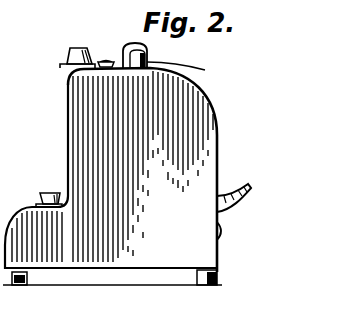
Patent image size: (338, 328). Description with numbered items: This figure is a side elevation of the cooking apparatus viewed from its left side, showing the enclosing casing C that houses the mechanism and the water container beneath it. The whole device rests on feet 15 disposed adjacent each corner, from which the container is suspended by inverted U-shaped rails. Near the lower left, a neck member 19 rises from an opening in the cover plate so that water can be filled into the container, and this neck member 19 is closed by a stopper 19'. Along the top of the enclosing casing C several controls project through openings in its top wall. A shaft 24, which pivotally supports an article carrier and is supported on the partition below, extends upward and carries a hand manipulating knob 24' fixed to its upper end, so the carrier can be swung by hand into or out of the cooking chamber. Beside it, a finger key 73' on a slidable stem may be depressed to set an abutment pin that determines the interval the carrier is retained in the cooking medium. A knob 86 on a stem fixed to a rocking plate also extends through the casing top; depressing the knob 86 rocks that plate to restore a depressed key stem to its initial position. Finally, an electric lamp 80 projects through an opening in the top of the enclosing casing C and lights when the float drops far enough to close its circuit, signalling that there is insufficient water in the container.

The enclosing casing C is at (78, 120).
The shaft 24 is at (60, 79).
The hand manipulating knob 24' is at (59, 44).
The finger key 73' is at (105, 43).
The electric lamp 80 is at (150, 48).
The knob 86 is at (189, 70).
The neck member 19 is at (35, 189).
The stopper 19' is at (45, 180).
The feet 15 is at (28, 278).